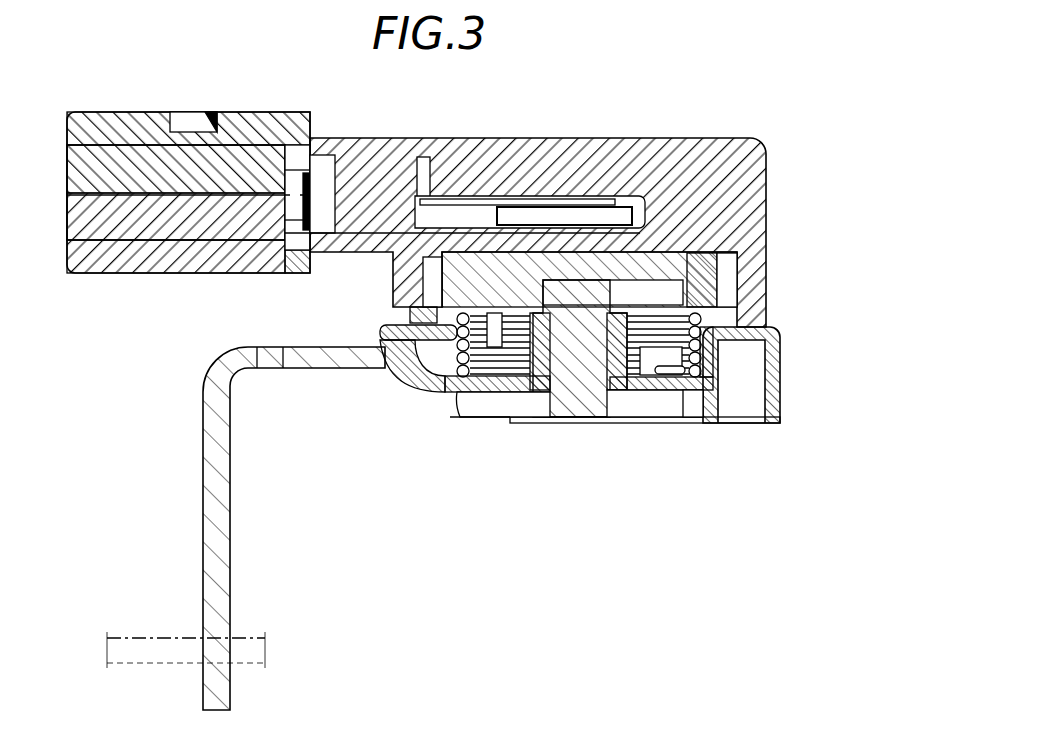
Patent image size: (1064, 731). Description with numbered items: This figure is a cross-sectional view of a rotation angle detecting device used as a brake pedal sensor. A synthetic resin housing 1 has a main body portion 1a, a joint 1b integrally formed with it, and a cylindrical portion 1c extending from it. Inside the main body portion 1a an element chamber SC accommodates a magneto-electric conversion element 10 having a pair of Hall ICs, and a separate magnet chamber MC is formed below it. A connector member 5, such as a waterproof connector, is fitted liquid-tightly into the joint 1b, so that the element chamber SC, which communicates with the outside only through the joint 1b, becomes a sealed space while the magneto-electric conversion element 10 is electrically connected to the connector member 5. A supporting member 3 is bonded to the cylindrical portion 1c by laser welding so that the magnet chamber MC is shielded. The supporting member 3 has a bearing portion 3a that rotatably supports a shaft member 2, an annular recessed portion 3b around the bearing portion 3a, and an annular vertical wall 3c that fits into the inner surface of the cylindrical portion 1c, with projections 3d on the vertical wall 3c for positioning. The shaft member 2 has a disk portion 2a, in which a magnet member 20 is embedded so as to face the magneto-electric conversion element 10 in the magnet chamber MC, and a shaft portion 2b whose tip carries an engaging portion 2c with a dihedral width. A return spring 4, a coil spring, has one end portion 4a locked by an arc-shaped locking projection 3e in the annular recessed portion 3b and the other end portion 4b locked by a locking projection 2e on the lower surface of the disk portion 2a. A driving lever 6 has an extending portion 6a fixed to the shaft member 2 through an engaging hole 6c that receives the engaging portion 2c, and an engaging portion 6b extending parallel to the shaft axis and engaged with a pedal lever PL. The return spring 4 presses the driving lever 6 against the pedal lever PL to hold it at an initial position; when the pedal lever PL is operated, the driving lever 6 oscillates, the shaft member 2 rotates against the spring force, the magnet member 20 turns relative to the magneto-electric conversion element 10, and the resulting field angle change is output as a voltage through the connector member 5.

The housing 1 is at (556, 211).
The main body portion 1a is at (757, 185).
The joint 1b is at (152, 262).
The cylindrical portion 1c is at (405, 300).
The shaft member 2 is at (534, 395).
The disk portion 2a is at (705, 292).
The shaft portion 2b is at (572, 418).
The engaging portion 2c is at (595, 395).
The locking projection 2e is at (478, 390).
The supporting member 3 is at (593, 413).
The bearing portion 3a is at (545, 400).
The annular recessed portion 3b is at (485, 395).
The vertical wall 3c is at (432, 345).
The projections 3d is at (420, 372).
The locking projection 3e is at (660, 392).
The return spring 4 is at (495, 350).
The end portion 4a is at (688, 395).
The end portion 4b is at (412, 312).
The connector member 5 is at (245, 127).
The driving lever 6 is at (464, 528).
The extending portion 6a is at (292, 368).
The engaging portion 6b is at (231, 520).
The engaging hole 6c is at (600, 423).
The magneto-electric conversion element 10 is at (505, 207).
The magnet member 20 is at (680, 270).
The element chamber SC is at (522, 200).
The magnet chamber MC is at (735, 283).
The pedal lever PL is at (148, 645).